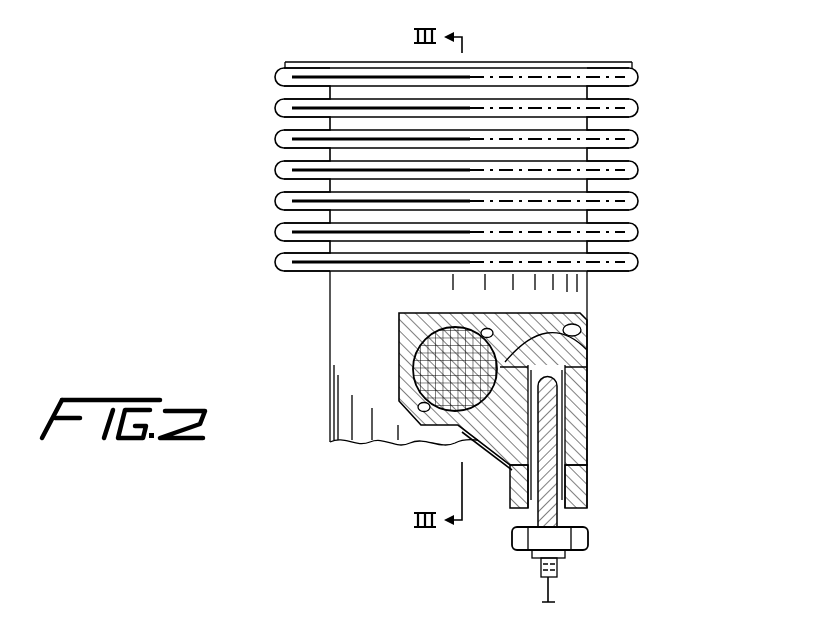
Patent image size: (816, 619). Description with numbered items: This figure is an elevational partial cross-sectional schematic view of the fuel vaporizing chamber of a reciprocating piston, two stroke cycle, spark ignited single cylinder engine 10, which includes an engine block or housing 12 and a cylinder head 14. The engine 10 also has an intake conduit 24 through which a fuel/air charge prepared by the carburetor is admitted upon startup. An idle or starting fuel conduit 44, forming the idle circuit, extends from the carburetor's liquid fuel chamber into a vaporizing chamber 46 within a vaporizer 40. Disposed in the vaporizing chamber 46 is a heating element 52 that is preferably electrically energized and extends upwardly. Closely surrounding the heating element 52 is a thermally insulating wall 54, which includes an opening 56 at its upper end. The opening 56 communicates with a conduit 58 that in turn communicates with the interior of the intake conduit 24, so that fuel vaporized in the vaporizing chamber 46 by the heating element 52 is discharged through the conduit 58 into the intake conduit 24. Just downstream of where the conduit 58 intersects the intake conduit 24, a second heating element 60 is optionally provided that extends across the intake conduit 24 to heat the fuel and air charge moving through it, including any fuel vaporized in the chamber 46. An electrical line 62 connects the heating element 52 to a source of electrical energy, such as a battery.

The engine 10 is at (506, 285).
The engine block or housing 12 is at (590, 297).
The cylinder head 14 is at (636, 82).
The intake conduit 24 is at (399, 364).
The vaporizer 40 is at (587, 500).
The idle or starting fuel conduit 44 is at (513, 462).
The vaporizing chamber 46 is at (587, 450).
The heating element 52 is at (587, 433).
The thermally insulating wall 54 is at (587, 405).
The opening 56 is at (587, 352).
The conduit 58 is at (581, 330).
The second heating element 60 is at (399, 386).
The electrical line 62 is at (552, 592).